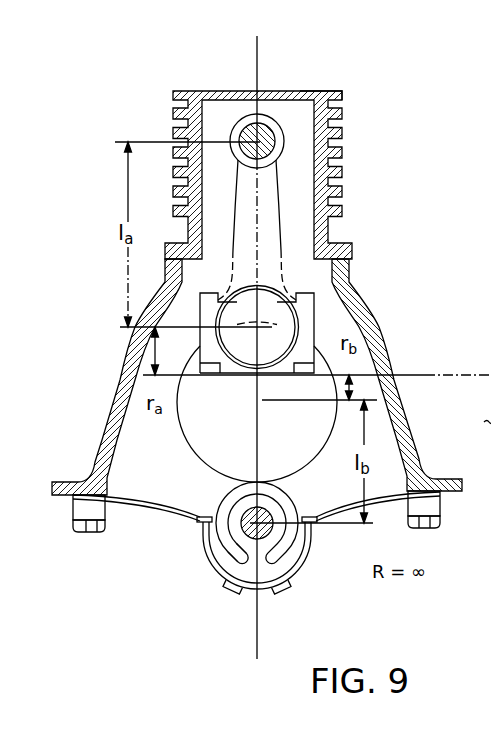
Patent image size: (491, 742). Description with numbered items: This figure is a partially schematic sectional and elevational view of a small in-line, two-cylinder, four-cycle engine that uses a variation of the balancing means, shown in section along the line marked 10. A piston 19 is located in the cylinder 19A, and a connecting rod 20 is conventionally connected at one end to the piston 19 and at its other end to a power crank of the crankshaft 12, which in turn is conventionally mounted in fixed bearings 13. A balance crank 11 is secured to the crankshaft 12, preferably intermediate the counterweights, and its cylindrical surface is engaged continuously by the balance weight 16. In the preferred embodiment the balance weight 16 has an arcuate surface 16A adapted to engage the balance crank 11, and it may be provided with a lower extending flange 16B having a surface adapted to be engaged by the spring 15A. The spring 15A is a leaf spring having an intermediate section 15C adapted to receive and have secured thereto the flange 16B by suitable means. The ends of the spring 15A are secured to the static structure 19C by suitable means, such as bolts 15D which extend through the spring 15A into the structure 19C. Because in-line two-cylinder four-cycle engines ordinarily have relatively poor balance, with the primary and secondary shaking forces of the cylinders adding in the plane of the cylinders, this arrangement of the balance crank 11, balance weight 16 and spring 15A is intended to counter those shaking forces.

The section line 10 is at (273, 36).
The balance crank 11 is at (310, 461).
The crankshaft 12 is at (490, 345).
The fixed bearings 13 is at (474, 423).
The spring 15A is at (153, 507).
The intermediate section 15C is at (257, 597).
The bolts 15D is at (90, 508).
The balance weight 16 is at (297, 577).
The arcuate surface 16A is at (225, 503).
The lower extending flange 16B is at (212, 553).
The piston 19 is at (279, 90).
The cylinder 19A is at (340, 91).
The static structure 19C is at (110, 423).
The connecting rod 20 is at (278, 218).